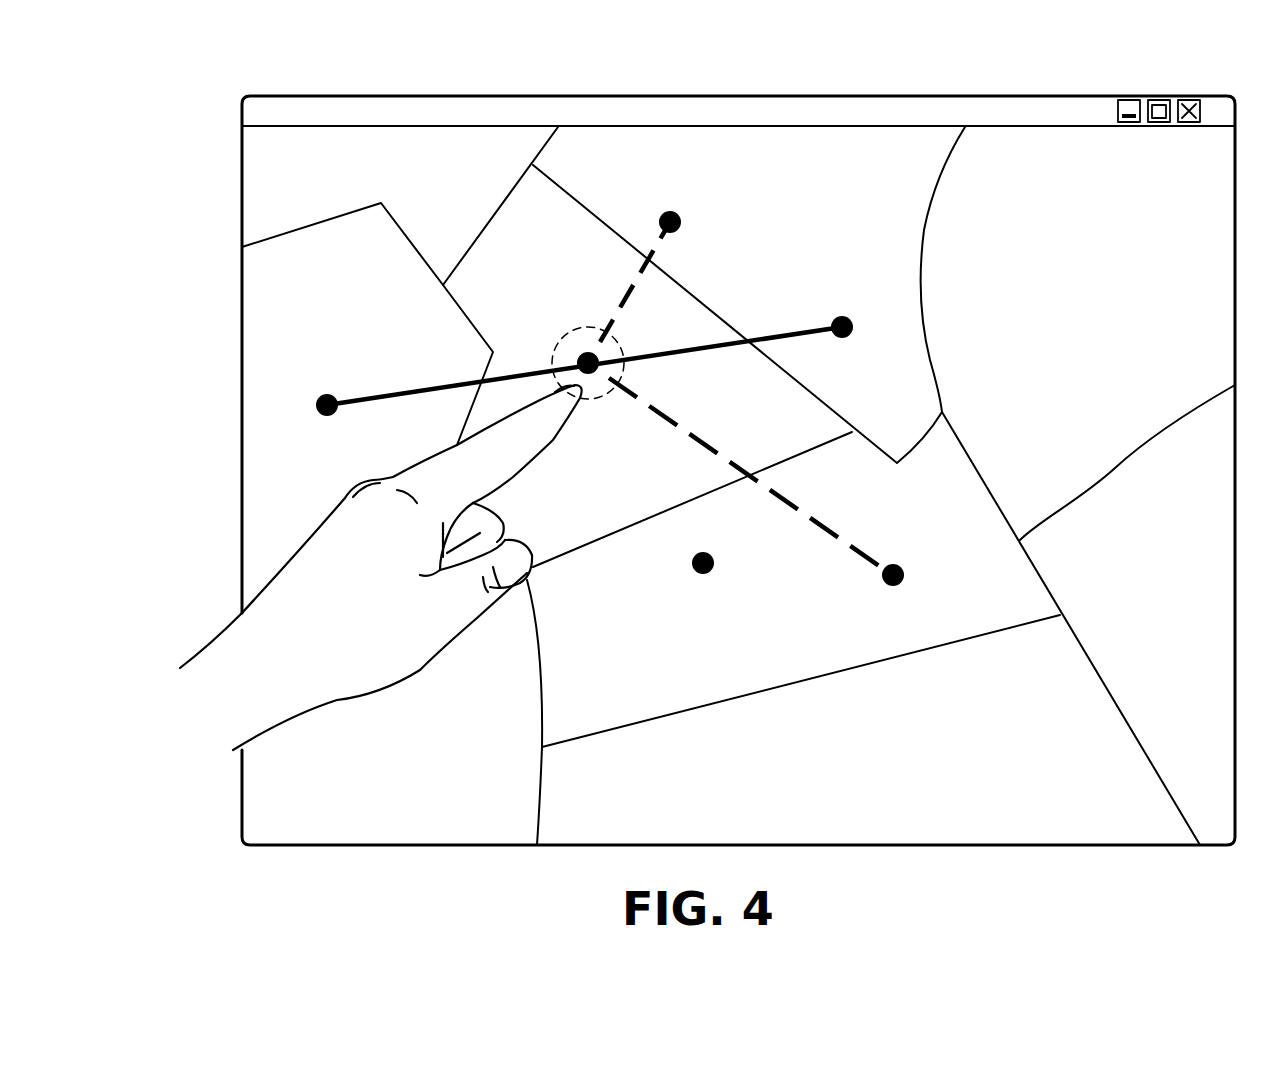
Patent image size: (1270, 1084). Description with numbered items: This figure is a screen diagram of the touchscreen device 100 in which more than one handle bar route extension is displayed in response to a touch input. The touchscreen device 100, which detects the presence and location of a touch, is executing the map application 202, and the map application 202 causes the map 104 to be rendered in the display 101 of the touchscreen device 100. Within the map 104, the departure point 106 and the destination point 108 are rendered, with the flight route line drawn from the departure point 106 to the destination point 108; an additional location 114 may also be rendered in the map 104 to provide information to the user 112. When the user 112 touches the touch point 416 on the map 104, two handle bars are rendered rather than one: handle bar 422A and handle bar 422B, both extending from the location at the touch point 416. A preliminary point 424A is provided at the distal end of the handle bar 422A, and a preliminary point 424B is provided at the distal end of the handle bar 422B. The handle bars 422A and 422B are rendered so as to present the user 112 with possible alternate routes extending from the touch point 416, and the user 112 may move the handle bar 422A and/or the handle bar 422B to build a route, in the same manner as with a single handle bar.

The touchscreen device 100 is at (216, 103).
The display 101 is at (262, 176).
The map application 202 is at (740, 113).
The map 104 is at (738, 486).
The departure point 106 is at (318, 398).
The destination point 108 is at (841, 316).
The touch point 416 is at (553, 352).
The preliminary point 424A is at (671, 210).
The preliminary point 424B is at (896, 563).
The handle bar 422A is at (616, 266).
The handle bar 422B is at (625, 424).
The location 114 is at (713, 557).
The user 112 is at (283, 677).